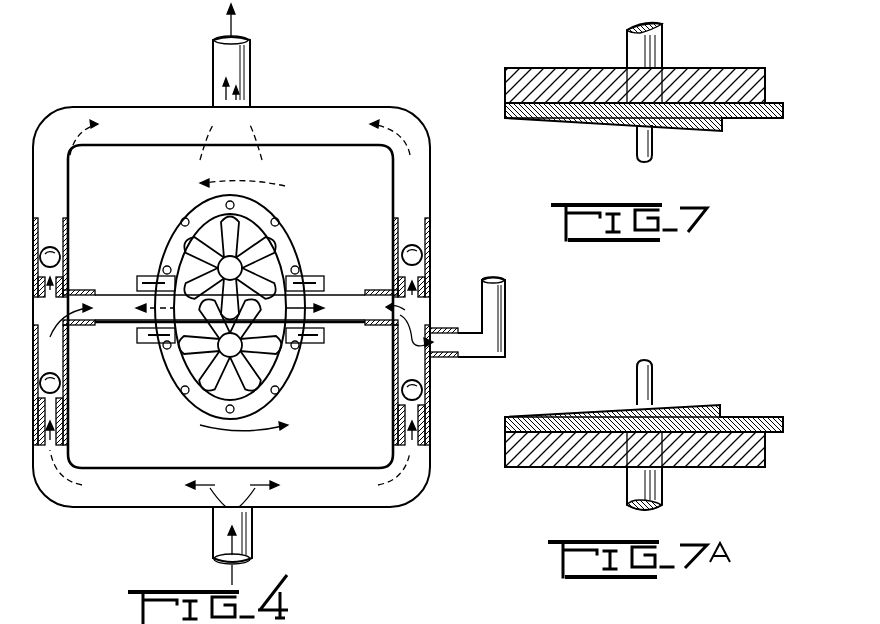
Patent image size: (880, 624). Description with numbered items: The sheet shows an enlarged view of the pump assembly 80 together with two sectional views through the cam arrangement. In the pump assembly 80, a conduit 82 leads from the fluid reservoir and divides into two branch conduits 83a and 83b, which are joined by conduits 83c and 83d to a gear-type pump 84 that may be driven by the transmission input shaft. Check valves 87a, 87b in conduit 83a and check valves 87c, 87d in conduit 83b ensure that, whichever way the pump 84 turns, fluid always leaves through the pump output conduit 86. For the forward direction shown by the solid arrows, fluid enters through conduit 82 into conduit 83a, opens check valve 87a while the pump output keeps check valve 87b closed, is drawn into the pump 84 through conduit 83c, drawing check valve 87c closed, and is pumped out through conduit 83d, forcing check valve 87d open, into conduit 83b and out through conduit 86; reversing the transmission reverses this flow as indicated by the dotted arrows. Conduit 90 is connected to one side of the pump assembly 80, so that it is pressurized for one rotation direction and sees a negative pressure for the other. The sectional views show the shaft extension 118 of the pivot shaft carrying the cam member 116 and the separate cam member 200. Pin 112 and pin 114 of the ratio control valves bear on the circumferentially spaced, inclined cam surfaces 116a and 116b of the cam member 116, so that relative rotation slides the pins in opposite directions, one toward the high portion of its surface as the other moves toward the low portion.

In FIG. 4, the pump assembly 80 is at (329, 98).
In FIG. 4, the conduit 82 is at (252, 535).
In FIG. 4, the pump output conduit 86 is at (250, 59).
In FIG. 4, the branch conduit 83a is at (70, 183).
In FIG. 4, the branch conduit 83b is at (430, 177).
In FIG. 4, the conduit 83c is at (96, 327).
In FIG. 4, the conduit 83d is at (340, 293).
In FIG. 4, the gear-type pump 84 is at (298, 232).
In FIG. 4, the check valve 87a is at (70, 412).
In FIG. 4, the check valve 87b is at (432, 408).
In FIG. 4, the check valve 87c is at (70, 274).
In FIG. 4, the check valve 87d is at (430, 277).
In FIG. 4, the control pressure conduit 90 is at (507, 322).
In FIG. 7, the cam member 200 is at (588, 68).
In FIG. 7A, the cam member 200 is at (590, 467).
In FIG. 7, the shaft extension 118 is at (663, 45).
In FIG. 7A, the shaft extension 118 is at (662, 487).
In FIG. 7, the pin-type projection 112 is at (637, 152).
In FIG. 7A, the pin-type projection 114 is at (653, 379).
In FIG. 7, the cam member 116 is at (767, 122).
In FIG. 7A, the cam member 116 is at (757, 417).
In FIG. 7, the cam surface 116a is at (702, 132).
In FIG. 7A, the cam surface 116b is at (618, 410).